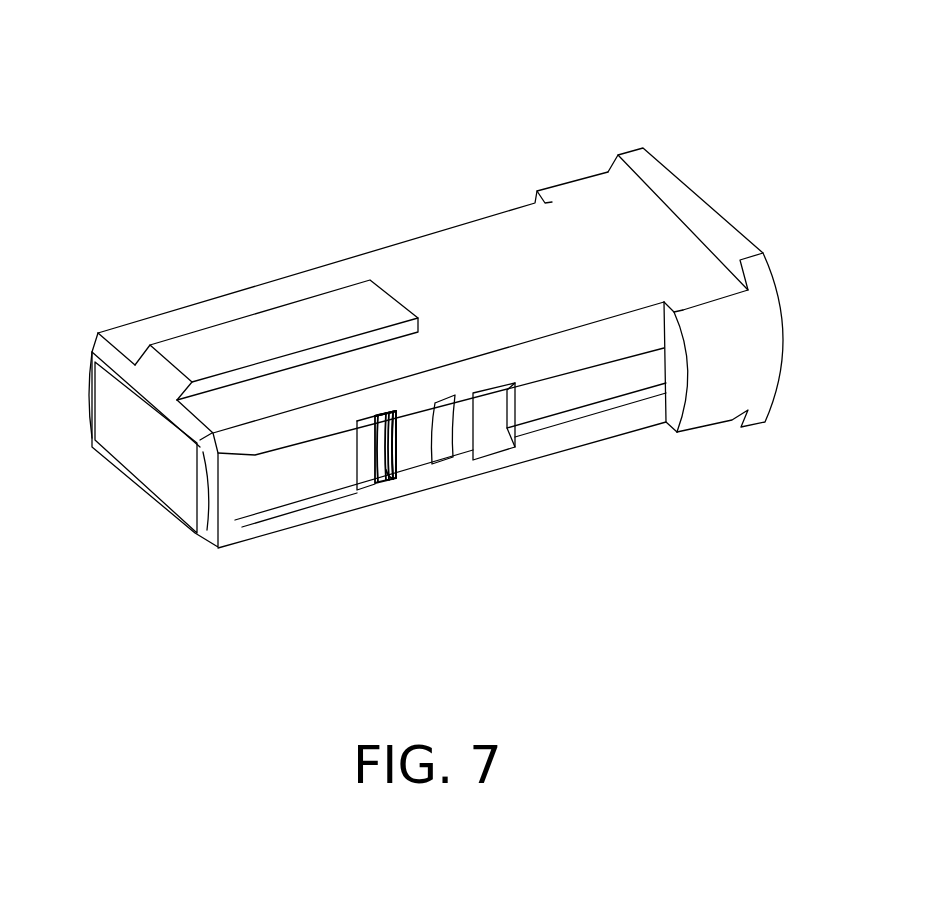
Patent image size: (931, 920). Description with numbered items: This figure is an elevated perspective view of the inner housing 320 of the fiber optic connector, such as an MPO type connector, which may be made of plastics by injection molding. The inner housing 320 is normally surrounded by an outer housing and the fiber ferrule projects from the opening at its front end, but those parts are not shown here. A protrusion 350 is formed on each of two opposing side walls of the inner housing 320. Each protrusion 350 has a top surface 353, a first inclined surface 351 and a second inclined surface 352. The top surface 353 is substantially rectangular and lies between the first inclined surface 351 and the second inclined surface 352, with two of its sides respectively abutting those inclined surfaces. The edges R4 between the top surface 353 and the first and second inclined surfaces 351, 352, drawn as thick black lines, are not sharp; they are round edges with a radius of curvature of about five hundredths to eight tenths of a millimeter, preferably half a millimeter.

The inner housing 320 is at (436, 311).
The protrusion 350 is at (373, 413).
The first inclined surface 351 is at (367, 467).
The second inclined surface 352 is at (397, 451).
The top surface 353 is at (386, 413).
The edges R4 is at (383, 472).